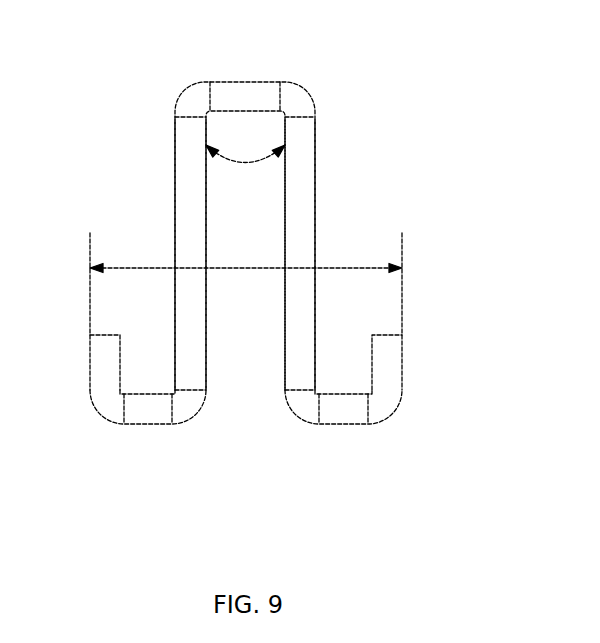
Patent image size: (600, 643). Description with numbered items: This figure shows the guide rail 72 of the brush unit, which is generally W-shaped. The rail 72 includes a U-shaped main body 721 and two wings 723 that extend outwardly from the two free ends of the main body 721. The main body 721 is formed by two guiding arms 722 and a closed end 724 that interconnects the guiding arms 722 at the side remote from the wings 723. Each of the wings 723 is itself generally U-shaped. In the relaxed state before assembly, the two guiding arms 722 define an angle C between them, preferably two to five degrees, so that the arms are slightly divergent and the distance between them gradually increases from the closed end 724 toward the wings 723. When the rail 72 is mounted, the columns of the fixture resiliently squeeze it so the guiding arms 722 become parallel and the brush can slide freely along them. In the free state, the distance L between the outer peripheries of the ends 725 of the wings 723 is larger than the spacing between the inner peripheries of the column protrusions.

The guide rail 72 is at (355, 138).
The main body 721 is at (308, 508).
The guiding arms 722 is at (195, 312).
The wings 723 is at (145, 412).
The closed end 724 is at (237, 92).
The ends of the wings 725 is at (385, 368).